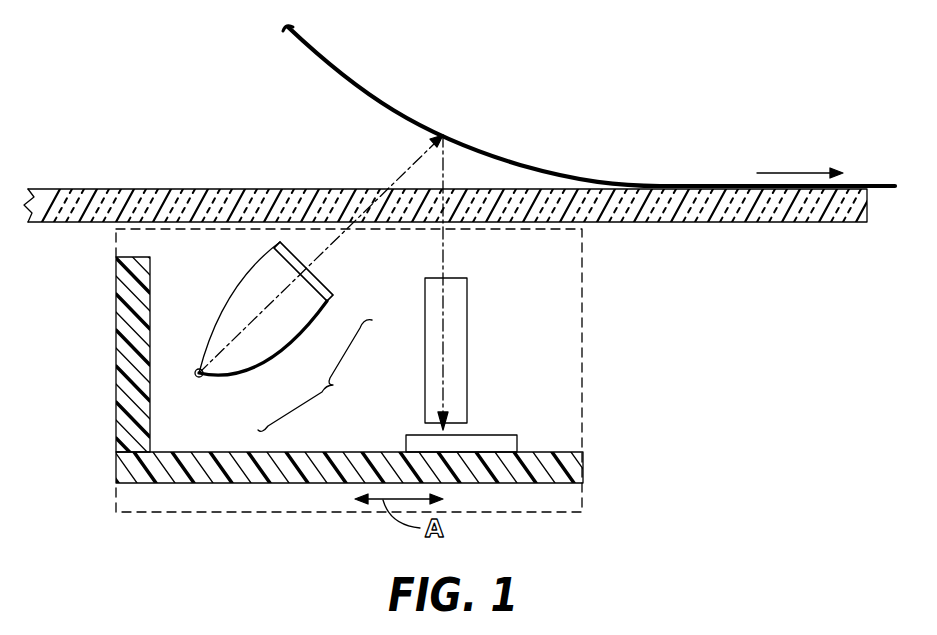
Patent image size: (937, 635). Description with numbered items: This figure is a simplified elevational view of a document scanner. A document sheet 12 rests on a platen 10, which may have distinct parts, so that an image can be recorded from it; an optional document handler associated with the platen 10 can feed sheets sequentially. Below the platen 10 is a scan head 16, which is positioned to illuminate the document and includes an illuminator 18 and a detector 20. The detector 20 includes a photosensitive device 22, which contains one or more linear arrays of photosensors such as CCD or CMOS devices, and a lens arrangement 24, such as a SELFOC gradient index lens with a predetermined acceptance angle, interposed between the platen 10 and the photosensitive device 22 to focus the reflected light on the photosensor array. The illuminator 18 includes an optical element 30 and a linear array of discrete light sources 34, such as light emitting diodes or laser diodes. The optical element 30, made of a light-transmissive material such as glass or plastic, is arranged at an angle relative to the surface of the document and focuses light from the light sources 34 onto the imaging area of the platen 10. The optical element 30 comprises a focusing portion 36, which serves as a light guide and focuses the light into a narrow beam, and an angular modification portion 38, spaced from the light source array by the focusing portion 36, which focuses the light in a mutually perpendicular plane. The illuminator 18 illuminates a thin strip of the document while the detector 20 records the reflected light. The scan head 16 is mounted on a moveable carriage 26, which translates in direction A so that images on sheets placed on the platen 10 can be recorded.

The platen 10 is at (665, 223).
The document sheet 12 is at (352, 72).
The scan head 16 is at (92, 390).
The illuminator 18 is at (277, 338).
The detector 20 is at (514, 324).
The photosensitive device 22 is at (493, 433).
The lens arrangement 24 is at (455, 280).
The moveable carriage 26 is at (293, 450).
The optical element 30 is at (315, 376).
The discrete light sources 34 is at (197, 380).
The focusing portion 36 is at (277, 342).
The angular modification portion 38 is at (327, 283).